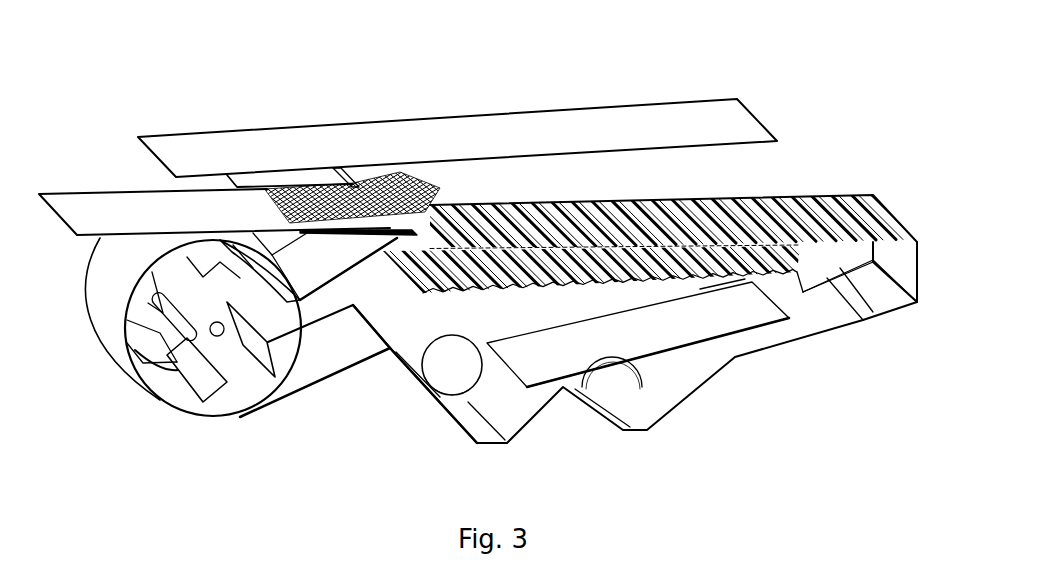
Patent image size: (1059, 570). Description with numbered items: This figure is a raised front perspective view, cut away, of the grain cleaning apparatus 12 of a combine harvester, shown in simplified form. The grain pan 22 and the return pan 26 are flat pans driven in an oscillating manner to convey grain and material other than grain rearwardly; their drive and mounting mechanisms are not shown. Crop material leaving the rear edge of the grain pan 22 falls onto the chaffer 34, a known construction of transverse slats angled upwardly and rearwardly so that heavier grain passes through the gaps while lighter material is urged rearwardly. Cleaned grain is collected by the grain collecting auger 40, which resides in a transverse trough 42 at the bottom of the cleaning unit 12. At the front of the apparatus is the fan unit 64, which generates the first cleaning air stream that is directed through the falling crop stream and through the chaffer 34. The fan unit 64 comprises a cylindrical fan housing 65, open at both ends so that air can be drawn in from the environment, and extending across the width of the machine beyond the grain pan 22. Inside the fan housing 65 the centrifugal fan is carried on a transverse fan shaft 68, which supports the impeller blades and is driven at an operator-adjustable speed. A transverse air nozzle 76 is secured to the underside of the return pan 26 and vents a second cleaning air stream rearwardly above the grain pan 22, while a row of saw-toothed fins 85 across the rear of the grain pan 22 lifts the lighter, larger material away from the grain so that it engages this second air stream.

The grain cleaning apparatus 12 is at (119, 61).
The grain pan 22 is at (78, 190).
The return pan 26 is at (706, 100).
The chaffer 34 is at (690, 207).
The grain collecting auger 40 is at (440, 380).
The transverse trough 42 is at (458, 428).
The fan unit 64 is at (93, 384).
The fan housing 65 is at (160, 397).
The fan shaft 68 is at (225, 336).
The transverse air nozzle 76 is at (314, 180).
The fins 85 is at (434, 191).